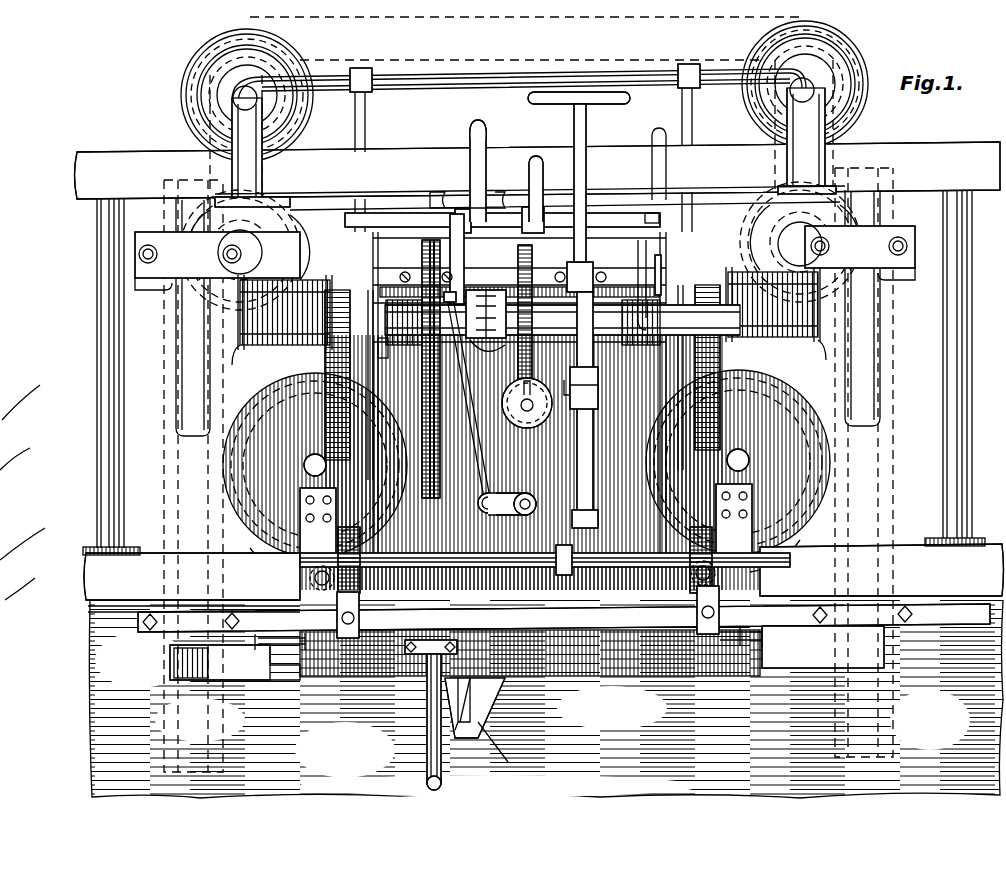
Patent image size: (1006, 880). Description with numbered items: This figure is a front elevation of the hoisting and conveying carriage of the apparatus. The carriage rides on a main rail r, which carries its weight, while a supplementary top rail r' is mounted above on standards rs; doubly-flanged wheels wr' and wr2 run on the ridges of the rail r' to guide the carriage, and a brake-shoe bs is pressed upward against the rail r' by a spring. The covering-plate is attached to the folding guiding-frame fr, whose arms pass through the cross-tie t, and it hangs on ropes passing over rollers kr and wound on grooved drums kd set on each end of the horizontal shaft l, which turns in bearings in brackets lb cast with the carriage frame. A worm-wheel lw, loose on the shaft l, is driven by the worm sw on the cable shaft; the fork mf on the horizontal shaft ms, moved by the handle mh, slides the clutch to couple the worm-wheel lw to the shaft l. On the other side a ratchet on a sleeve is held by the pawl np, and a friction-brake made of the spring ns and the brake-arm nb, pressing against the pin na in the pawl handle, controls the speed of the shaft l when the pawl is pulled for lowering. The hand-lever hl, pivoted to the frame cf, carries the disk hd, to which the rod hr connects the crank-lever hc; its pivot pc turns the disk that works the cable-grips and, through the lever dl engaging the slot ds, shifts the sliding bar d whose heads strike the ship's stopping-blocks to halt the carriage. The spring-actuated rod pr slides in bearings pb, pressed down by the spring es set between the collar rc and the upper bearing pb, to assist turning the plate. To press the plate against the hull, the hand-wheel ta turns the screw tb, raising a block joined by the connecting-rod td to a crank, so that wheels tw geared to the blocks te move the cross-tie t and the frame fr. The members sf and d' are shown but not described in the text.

The doubly-flanged wheel wr2 is at (180, 90).
The doubly-flanged wheel wr' is at (525, 246).
The supplementary top rail r' is at (538, 170).
The rail r is at (543, 575).
The standard rs is at (110, 394).
The side frame sf is at (528, 313).
The folding frame fr is at (178, 490).
The hand-wheel ta is at (525, 148).
The screw tb is at (586, 132).
The hand-lever hl is at (486, 132).
The handle mh is at (532, 180).
The brake-shoe bs is at (461, 188).
The horizontal shaft ms is at (600, 212).
The pin na is at (668, 238).
The pawl np is at (660, 260).
The brake-arm nb is at (660, 288).
The bearing pb is at (348, 700).
The fork mf is at (460, 260).
The worm-wheel lw is at (540, 312).
The spring ns is at (640, 258).
The spring es is at (416, 283).
The horizontal shaft l is at (388, 350).
The grooved drum kd is at (526, 462).
The bracket lb is at (529, 413).
The disk hd is at (486, 340).
The worm sw is at (527, 406).
The rod hr is at (482, 466).
The pivot pc is at (532, 488).
The connecting-rod td is at (582, 462).
The collar rc is at (480, 506).
The crank-lever hc is at (545, 551).
The wheel tw is at (508, 580).
The block te is at (358, 620).
The cross-tie t is at (564, 640).
The sliding bar d is at (237, 656).
The roller kr is at (782, 640).
The frame cf is at (620, 664).
The spring-actuated rod pr is at (428, 760).
The slot ds is at (450, 722).
The drain d' is at (490, 686).
The lever dl is at (504, 748).